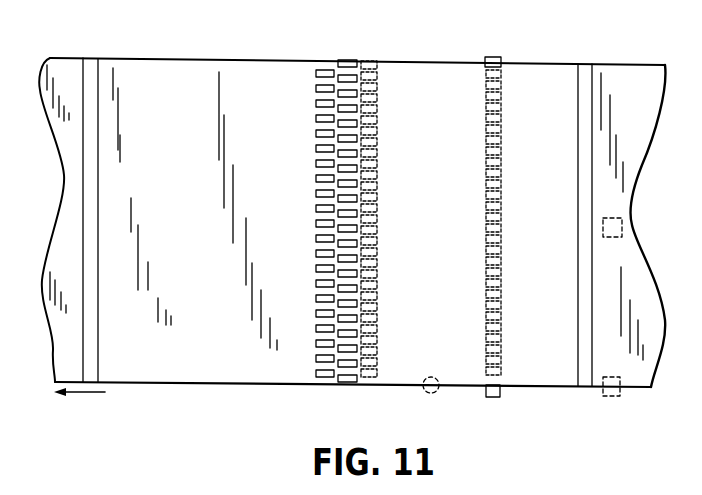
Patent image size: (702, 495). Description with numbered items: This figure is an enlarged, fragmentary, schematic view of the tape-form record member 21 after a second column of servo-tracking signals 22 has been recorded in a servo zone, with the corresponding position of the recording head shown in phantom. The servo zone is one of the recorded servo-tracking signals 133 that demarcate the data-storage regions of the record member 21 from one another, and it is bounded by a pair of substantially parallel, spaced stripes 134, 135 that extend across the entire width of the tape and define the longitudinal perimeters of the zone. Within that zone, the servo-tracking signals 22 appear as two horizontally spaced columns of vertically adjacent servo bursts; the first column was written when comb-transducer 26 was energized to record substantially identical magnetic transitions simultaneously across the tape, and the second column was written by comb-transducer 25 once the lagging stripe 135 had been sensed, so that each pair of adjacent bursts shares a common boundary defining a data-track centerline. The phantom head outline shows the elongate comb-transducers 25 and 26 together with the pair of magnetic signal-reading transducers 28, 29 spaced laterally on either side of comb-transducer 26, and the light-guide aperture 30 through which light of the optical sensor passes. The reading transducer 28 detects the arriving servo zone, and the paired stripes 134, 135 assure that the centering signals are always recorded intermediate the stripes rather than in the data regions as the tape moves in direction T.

The record member 21 is at (236, 41).
The servo-tracking signals 133 is at (426, 35).
The stripe 134 is at (88, 62).
The stripe 135 is at (582, 68).
The servo-tracking signals 22 is at (316, 359).
The servo-signal recording comb-transducer 25 is at (363, 60).
The servo-signal recording comb-transducer 26 is at (492, 58).
The magnetic signal-reading transducer 28 is at (636, 228).
The magnetic signal-reading transducer 29 is at (620, 392).
The light-guide aperture 30 is at (437, 395).